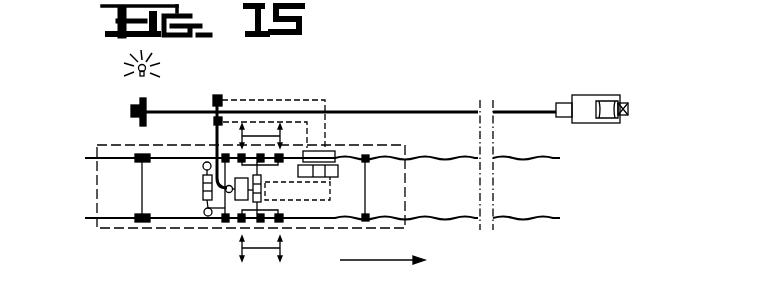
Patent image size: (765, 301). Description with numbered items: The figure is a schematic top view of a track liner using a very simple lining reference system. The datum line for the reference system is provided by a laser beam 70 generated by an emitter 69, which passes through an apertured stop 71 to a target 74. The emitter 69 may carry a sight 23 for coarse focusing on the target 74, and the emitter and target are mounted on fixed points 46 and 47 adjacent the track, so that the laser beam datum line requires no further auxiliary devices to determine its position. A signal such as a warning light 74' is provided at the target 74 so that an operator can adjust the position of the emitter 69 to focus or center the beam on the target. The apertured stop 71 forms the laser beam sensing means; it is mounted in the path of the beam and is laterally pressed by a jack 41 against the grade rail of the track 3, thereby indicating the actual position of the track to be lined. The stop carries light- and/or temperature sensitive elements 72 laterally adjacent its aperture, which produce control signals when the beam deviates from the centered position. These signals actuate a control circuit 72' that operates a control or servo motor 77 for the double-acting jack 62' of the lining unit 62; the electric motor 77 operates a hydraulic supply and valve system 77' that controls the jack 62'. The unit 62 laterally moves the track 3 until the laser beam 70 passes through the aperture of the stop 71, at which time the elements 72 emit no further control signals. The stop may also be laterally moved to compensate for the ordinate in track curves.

The track 3 is at (438, 220).
The sight 23 is at (604, 106).
The jack 41 is at (206, 199).
The fixed point 46 is at (624, 118).
The fixed point 47 is at (131, 110).
The lining unit 62 is at (271, 209).
The double-acting jack 62' is at (308, 219).
The emitter 69 is at (577, 114).
The laser beam 70 is at (428, 111).
The apertured stop 71 is at (222, 98).
The light- and/or temperature sensitive elements 72 is at (273, 112).
The control circuit 72' is at (279, 112).
The target 74 is at (156, 119).
The warning light 74' is at (162, 63).
The control or servo motor 77 is at (329, 143).
The hydraulic supply and valve system 77' is at (329, 185).